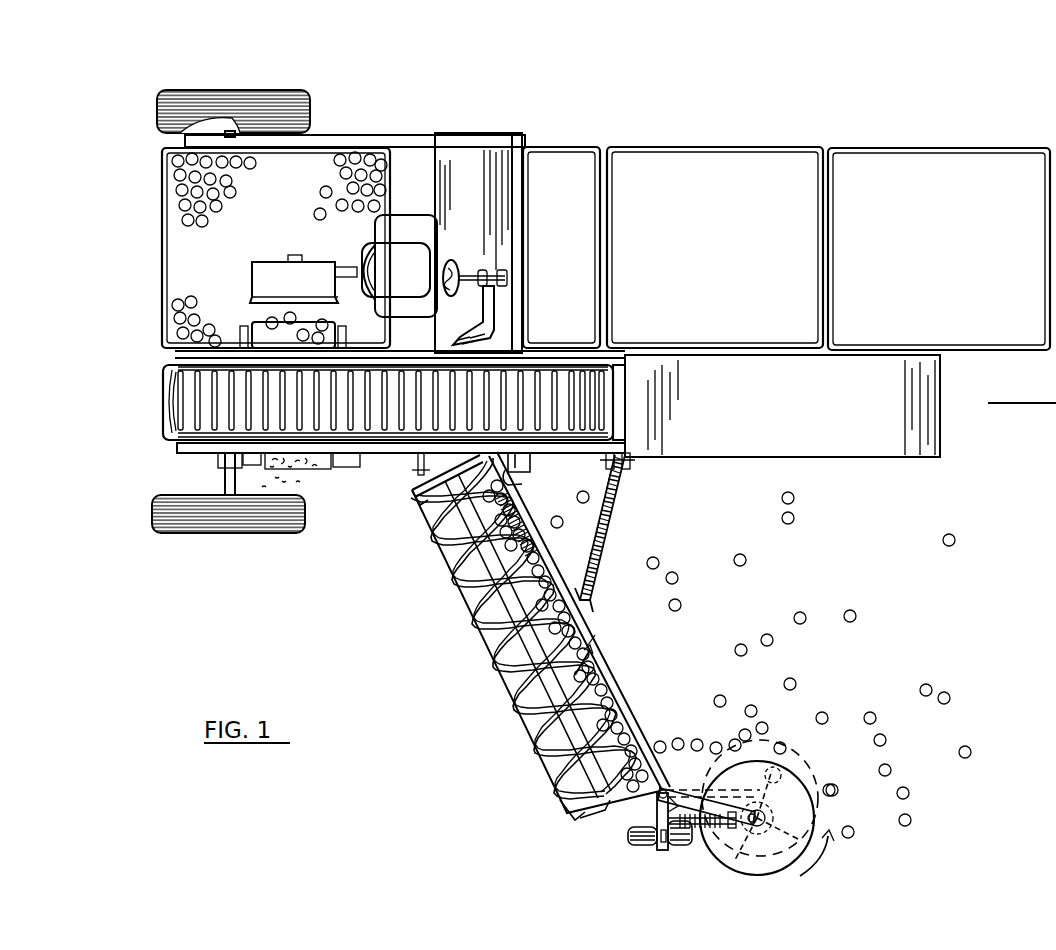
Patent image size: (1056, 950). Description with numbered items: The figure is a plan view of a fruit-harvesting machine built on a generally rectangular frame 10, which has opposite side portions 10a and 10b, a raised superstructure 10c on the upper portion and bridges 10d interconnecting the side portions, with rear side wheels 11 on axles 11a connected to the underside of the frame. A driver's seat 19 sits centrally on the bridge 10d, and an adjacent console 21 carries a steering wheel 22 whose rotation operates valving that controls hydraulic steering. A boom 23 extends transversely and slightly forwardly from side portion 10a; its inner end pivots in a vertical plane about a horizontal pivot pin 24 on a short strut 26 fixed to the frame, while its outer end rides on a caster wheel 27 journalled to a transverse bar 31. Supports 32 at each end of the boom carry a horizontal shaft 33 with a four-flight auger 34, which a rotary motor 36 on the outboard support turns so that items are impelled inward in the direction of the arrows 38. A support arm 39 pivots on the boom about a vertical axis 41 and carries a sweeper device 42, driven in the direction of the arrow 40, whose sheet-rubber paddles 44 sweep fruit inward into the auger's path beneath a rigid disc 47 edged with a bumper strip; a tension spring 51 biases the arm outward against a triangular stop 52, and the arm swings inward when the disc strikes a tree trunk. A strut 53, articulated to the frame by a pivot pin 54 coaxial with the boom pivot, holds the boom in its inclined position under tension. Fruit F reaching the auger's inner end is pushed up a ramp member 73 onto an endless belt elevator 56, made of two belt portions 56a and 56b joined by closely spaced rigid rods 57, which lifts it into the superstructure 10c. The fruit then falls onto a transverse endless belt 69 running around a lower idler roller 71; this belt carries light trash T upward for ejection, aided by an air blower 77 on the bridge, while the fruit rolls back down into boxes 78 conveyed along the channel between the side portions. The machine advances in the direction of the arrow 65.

The frame 10 is at (372, 462).
The frame side portion 10a is at (805, 458).
The frame side portion 10b is at (352, 135).
The raised superstructure 10c is at (190, 450).
The bridge 10d is at (512, 160).
The rear side wheel 11 is at (305, 108).
The wheel axles 11a is at (225, 128).
The driver's seat 19 is at (410, 268).
The console 21 is at (488, 322).
The steering wheel 22 is at (455, 272).
The boom 23 is at (612, 700).
The horizontal pivot pin 24 is at (522, 483).
The strut 26 is at (538, 466).
The caster wheel 27 is at (648, 846).
The transverse bar 31 is at (659, 856).
The support 32 is at (418, 490).
The horizontal shaft 33 is at (515, 655).
The auger 34 is at (468, 606).
The rotary motor 36 is at (610, 840).
The arrows 38 is at (600, 655).
The support arm 39 is at (737, 825).
The arrow 40 is at (825, 858).
The vertical pivot axis 41 is at (690, 770).
The sweeper device 42 is at (800, 746).
The paddles 44 is at (815, 812).
The rigid disc 47 is at (843, 778).
The tension spring 51 is at (705, 845).
The triangular stop 52 is at (658, 822).
The strut 53 is at (608, 522).
The pivot pin 54 is at (628, 462).
The endless belt elevator 56 is at (158, 400).
The endless belt portion 56a is at (613, 438).
The endless belt portion 56b is at (615, 370).
The rigid rods 57 is at (625, 403).
The arrow 65 is at (1035, 405).
The endless belt 69 is at (315, 470).
The lower idler roller 71 is at (262, 328).
The ramp member 73 is at (425, 460).
The air blower 77 is at (265, 272).
The boxes 78 is at (163, 225).
The fruit F is at (535, 560).
The trash T is at (304, 468).